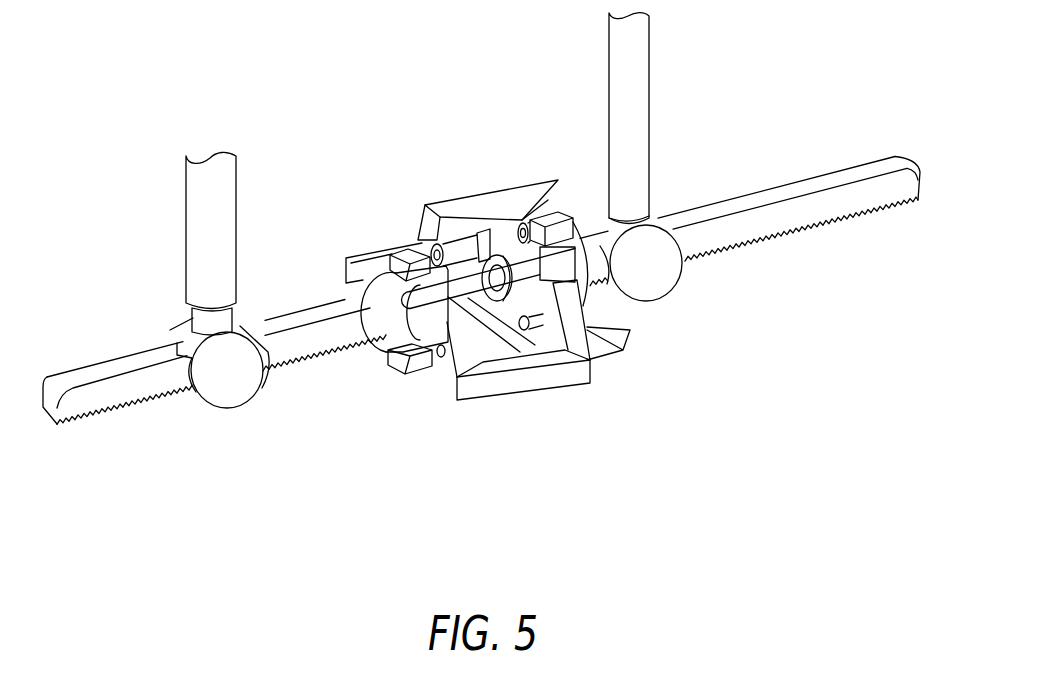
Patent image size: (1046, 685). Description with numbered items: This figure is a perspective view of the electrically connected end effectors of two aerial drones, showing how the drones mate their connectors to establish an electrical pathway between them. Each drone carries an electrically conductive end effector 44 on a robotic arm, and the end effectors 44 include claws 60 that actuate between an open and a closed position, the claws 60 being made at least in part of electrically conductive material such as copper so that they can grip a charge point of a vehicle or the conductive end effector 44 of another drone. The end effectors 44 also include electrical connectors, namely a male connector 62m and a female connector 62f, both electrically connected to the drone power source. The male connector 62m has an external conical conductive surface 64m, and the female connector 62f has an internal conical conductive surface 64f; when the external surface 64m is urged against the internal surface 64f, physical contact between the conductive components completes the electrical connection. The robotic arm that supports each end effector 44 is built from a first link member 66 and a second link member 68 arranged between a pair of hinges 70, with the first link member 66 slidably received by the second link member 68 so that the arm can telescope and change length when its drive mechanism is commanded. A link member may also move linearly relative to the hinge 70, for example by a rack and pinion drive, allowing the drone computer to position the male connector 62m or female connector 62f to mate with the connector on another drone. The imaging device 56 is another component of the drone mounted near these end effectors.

The electrically conductive end effector 44 is at (390, 343).
The imaging device 56 is at (405, 250).
The claw 60 is at (607, 357).
The male connector 62m is at (462, 285).
The female connector 62f is at (500, 310).
The external surface 64m is at (455, 335).
The internal conical shaped conductive surface 64f is at (486, 283).
The first link member 66 is at (200, 320).
The second link member 68 is at (193, 215).
The hinge 70 is at (217, 407).